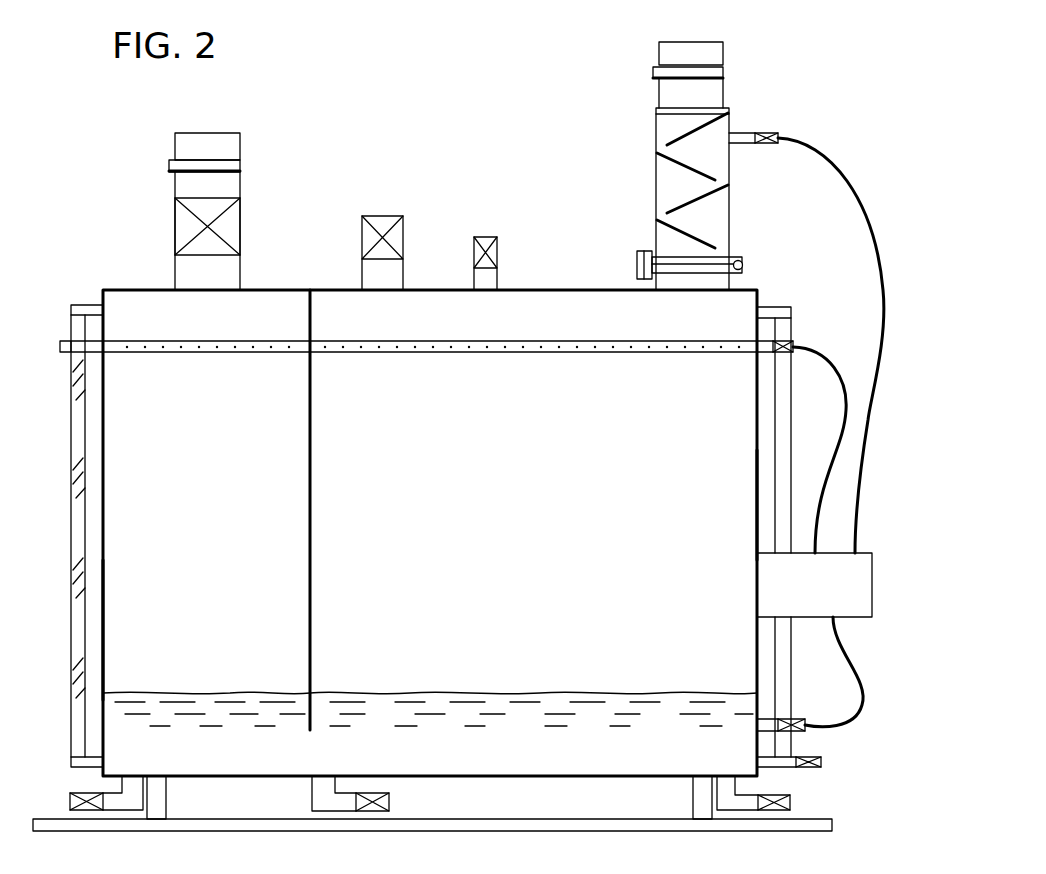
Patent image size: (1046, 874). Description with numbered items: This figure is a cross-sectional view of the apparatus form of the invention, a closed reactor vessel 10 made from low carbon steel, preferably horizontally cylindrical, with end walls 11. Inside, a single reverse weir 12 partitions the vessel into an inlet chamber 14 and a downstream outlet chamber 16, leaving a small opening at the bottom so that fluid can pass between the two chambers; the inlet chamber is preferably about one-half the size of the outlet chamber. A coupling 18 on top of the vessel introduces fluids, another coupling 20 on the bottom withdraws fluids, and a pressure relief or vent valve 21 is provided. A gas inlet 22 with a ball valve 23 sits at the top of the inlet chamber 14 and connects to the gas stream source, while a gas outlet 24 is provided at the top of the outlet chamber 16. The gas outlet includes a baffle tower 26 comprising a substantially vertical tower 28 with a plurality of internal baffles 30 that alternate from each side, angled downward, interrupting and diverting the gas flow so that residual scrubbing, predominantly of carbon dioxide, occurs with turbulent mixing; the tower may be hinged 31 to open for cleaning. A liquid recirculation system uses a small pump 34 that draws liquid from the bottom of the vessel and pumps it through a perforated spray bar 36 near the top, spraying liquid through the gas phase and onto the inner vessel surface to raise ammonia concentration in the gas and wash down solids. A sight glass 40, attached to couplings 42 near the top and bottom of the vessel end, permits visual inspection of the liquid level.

The closed reactor vessel 10 is at (588, 290).
The end walls 11 is at (104, 625).
The reverse weir 12 is at (312, 568).
The inlet chamber 14 is at (216, 492).
The outlet chamber 16 is at (556, 492).
The coupling 18 is at (362, 240).
The coupling 20 is at (790, 805).
The pressure relief valve or vent valve 21 is at (497, 253).
The gas inlet 22 is at (240, 147).
The ball valve 23 is at (175, 230).
The gas outlet 24 is at (723, 55).
The baffle tower 26 is at (656, 137).
The vertical tower 28 is at (729, 205).
The internal baffles 30 is at (667, 180).
The hinge 31 is at (745, 265).
The pump 34 is at (848, 600).
The spray bar 36 is at (470, 352).
The sight glass 40 is at (72, 510).
The couplings 42 is at (78, 305).